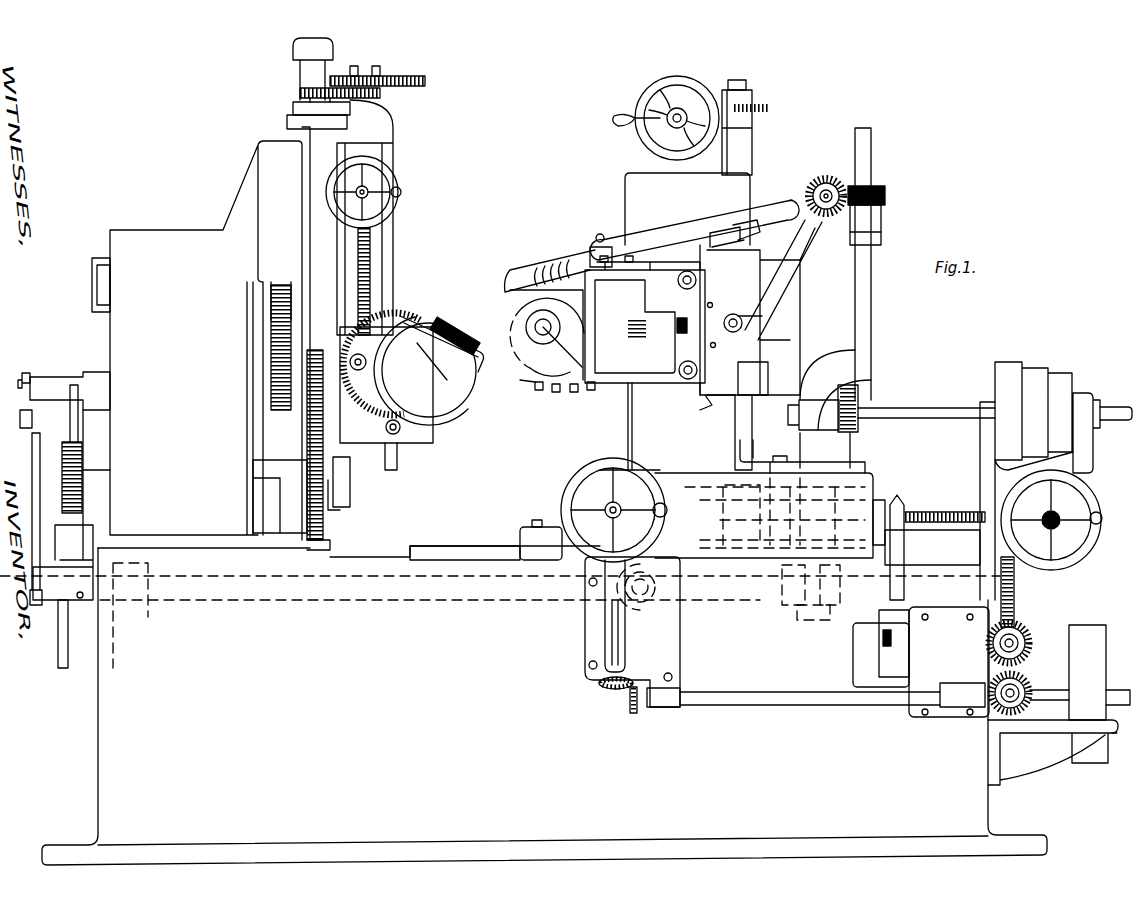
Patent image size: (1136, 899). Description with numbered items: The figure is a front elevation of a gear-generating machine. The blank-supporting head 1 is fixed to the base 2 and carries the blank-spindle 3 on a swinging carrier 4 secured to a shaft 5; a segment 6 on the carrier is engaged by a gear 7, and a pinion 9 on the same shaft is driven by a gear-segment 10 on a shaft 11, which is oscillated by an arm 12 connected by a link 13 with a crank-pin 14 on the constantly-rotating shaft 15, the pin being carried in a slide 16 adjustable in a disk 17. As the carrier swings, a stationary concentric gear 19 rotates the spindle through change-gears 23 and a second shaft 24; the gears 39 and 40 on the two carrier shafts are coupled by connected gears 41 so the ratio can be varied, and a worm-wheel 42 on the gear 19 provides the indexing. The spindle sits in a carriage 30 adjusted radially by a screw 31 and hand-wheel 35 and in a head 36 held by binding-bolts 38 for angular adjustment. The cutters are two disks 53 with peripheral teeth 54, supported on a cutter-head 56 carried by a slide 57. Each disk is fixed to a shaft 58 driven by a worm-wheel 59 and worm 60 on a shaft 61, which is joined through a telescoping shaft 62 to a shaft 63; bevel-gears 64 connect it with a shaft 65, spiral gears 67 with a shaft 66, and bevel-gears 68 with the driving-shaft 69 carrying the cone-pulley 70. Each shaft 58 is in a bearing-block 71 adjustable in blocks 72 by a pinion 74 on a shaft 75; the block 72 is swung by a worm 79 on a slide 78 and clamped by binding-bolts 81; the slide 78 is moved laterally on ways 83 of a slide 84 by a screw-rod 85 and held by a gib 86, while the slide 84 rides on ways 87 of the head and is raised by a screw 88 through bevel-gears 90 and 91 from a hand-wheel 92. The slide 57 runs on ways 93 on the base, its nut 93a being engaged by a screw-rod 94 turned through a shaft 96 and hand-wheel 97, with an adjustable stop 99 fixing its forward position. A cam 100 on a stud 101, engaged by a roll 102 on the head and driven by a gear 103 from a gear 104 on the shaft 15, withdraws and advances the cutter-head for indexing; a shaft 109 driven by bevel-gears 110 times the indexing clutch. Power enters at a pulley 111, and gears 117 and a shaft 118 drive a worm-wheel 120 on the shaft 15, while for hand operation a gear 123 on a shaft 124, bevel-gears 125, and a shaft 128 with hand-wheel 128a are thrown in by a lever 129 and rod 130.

The blank-supporting head 1 is at (110, 344).
The base 2 is at (112, 727).
The blank-spindle 3 is at (472, 304).
The swinging carrier 4 is at (336, 501).
The shaft 5 is at (92, 276).
The segment 6 is at (316, 350).
The gear 7 is at (330, 534).
The pinion 9 is at (72, 512).
The gear-segment 10 is at (82, 450).
The shaft 11 is at (20, 376).
The arm 12 is at (20, 418).
The link 13 is at (32, 451).
The crank-pin 14 is at (33, 607).
The constantly-rotating shaft 15 is at (200, 600).
The slide 16 is at (40, 605).
The disk 17 is at (66, 652).
The stationary gear 19 is at (300, 300).
The series of gears 23 is at (362, 62).
The second shaft 24 is at (393, 242).
The carriage 30 is at (372, 446).
The screw 31 is at (372, 280).
The hand-wheel 35 is at (392, 176).
The head 36 is at (455, 405).
The binding-bolts 38 is at (398, 434).
The gear 39 is at (300, 93).
The gear 40 is at (426, 81).
The connected gears 41 is at (300, 72).
The worm-wheel 42 is at (280, 285).
The disks 53 is at (576, 392).
The teeth 54 is at (560, 392).
The cutter-head 56 is at (630, 424).
The slide 57 is at (874, 478).
The shaft 58 is at (538, 335).
The worm-wheel 59 is at (556, 312).
The worm 60 is at (560, 262).
The shaft 61 is at (600, 244).
The telescoping shaft 62 is at (670, 232).
The shaft 63 is at (750, 206).
The bevel-gears 64 is at (826, 180).
The shaft 65 is at (830, 190).
The shaft 66 is at (872, 296).
The spiral gears 67 is at (885, 194).
The bevel-gears 68 is at (860, 398).
The driving-shaft 69 is at (945, 418).
The cone-pulley 70 is at (1040, 372).
The bearing-block 71 is at (570, 352).
The blocks 72 is at (640, 390).
The pinion 74 is at (628, 322).
The shaft 75 is at (630, 270).
The slide 78 is at (712, 394).
The worm 79 is at (677, 330).
The binding-bolts 81 is at (680, 366).
The ways 83 is at (745, 290).
The slide 84 is at (790, 335).
The screw-rod 85 is at (760, 317).
The gib 86 is at (753, 378).
The ways 87 is at (735, 436).
The screw 88 is at (746, 84).
The bevel-gear 90 is at (758, 108).
The bevel-gear 91 is at (726, 90).
The hand-wheel 92 is at (688, 72).
The ways 93 is at (470, 548).
The nut 93a is at (880, 496).
The screw-rod 94 is at (936, 512).
The shaft 96 is at (1052, 527).
The hand-wheel 97 is at (1096, 534).
The adjustable stop 99 is at (534, 558).
The cam 100 is at (735, 548).
The stud 101 is at (735, 510).
The roll 102 is at (785, 470).
The gear 103 is at (840, 568).
The gear 104 is at (790, 605).
The shaft 109 is at (642, 626).
The bevel-gears 110 is at (646, 606).
The pulley 111 is at (1090, 632).
The gears 117 is at (1028, 680).
The shaft 118 is at (1020, 636).
The worm-wheel 120 is at (1014, 600).
The gear 123 is at (962, 695).
The shaft 124 is at (836, 700).
The bevel-gears 125 is at (628, 696).
The shaft 128 is at (620, 504).
The hand-wheel 128a is at (568, 492).
The lever 129 is at (895, 594).
The rod 130 is at (888, 641).